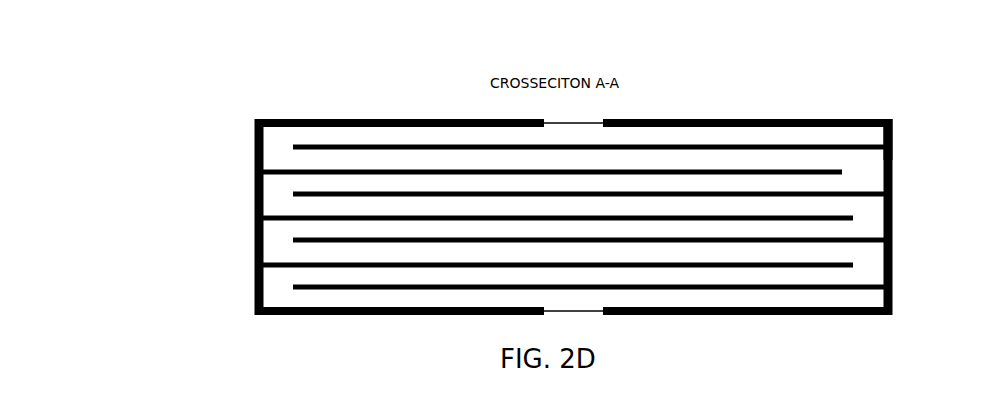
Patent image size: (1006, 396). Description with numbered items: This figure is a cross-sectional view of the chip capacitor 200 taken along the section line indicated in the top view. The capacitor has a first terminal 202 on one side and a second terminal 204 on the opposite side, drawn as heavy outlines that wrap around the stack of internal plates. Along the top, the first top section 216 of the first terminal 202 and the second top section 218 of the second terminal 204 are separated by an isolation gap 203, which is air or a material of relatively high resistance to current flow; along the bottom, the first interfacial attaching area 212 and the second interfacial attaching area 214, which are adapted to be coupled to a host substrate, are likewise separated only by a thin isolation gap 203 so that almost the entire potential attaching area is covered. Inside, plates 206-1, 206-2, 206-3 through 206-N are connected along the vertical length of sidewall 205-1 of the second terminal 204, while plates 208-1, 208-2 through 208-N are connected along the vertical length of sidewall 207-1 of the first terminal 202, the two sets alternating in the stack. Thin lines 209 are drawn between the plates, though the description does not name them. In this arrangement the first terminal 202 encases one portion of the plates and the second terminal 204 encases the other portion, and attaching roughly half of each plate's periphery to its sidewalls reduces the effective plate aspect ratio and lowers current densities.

The chip capacitor 200 is at (282, 87).
The first terminal 202 is at (255, 180).
The isolation gap 203 is at (578, 321).
The second terminal 204 is at (893, 178).
The sidewall 205-1 is at (892, 140).
The plate 206-1 is at (842, 144).
The plate 206-2 is at (853, 197).
The plate 206-3 is at (845, 241).
The plate 206-N is at (822, 288).
The sidewall 207-1 is at (256, 215).
The plate 208-1 is at (281, 166).
The plate 208-2 is at (277, 220).
The plate 208-N is at (288, 266).
The dielectric layers 209 is at (762, 203).
The first interfacial attaching area 212 is at (418, 314).
The second interfacial attaching area 214 is at (695, 314).
The first top section 216 is at (366, 119).
The second top section 218 is at (816, 119).